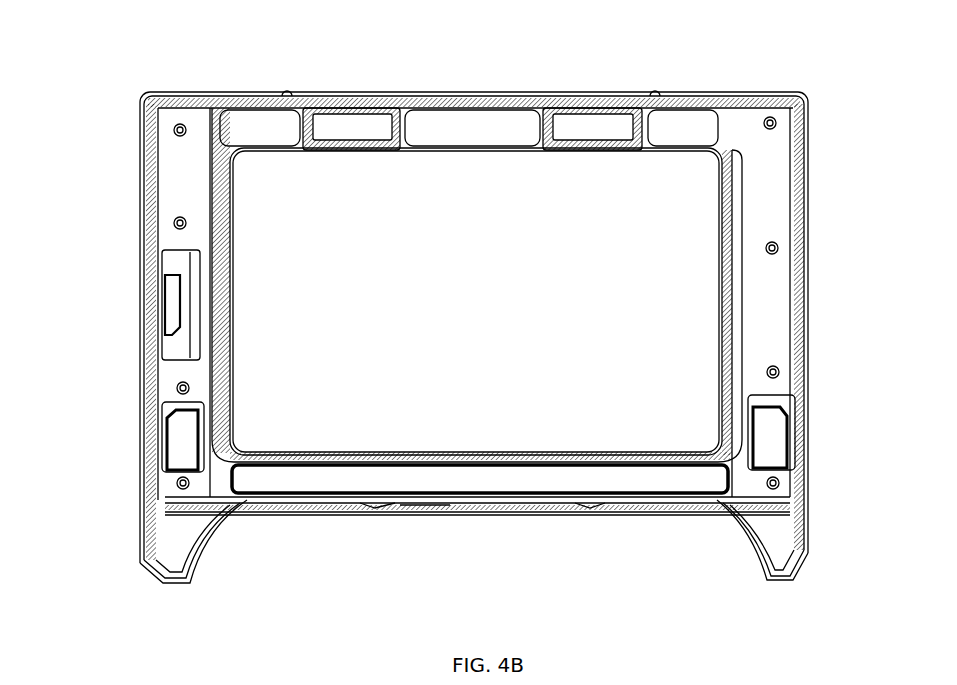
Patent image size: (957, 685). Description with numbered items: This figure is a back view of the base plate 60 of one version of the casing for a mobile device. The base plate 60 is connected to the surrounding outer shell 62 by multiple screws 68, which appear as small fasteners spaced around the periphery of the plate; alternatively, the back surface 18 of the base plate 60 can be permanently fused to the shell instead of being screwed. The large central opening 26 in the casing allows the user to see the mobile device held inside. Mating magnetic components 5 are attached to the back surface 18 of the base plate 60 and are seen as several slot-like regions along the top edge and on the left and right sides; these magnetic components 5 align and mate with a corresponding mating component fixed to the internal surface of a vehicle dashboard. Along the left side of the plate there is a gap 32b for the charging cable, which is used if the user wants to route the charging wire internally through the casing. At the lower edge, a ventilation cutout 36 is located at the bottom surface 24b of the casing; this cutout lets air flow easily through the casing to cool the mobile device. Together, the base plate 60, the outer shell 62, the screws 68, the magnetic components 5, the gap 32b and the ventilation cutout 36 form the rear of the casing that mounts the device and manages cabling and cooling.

The magnetic component 5 is at (342, 122).
The opening 26 is at (518, 232).
The screw 68 is at (777, 122).
The base plate 60 is at (753, 197).
The gap 32b is at (172, 300).
The outer shell 62 is at (178, 530).
The back surface 18 is at (383, 483).
The ventilation cutout 36 is at (519, 527).
The bottom surface 24b is at (607, 500).